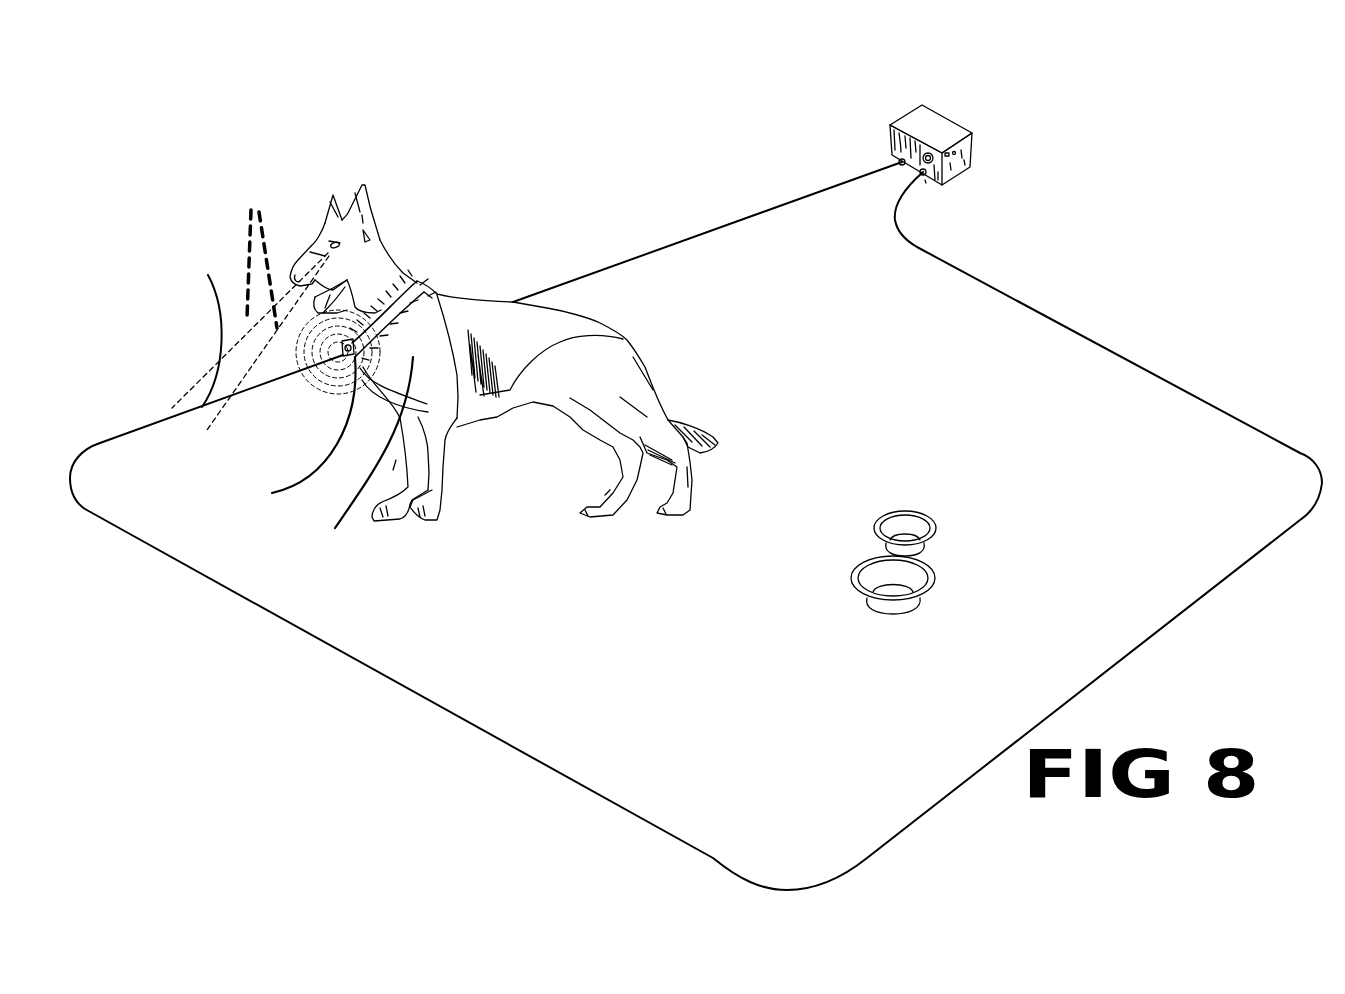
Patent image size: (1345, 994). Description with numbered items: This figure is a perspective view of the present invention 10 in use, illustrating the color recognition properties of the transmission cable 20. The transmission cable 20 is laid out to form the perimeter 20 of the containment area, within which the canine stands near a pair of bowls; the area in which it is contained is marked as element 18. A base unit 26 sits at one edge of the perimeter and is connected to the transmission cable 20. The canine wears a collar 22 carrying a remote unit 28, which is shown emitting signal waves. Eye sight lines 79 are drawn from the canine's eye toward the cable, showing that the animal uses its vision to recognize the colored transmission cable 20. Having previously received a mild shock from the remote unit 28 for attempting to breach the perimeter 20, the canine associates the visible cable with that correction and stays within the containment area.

The present invention 10 is at (1240, 200).
The containment area 18 is at (877, 412).
The transmission cable 20 is at (1130, 277).
The collar 22 is at (349, 469).
The base unit 26 is at (975, 155).
The remote unit 28 is at (281, 448).
The eye sight lines 79 is at (255, 245).